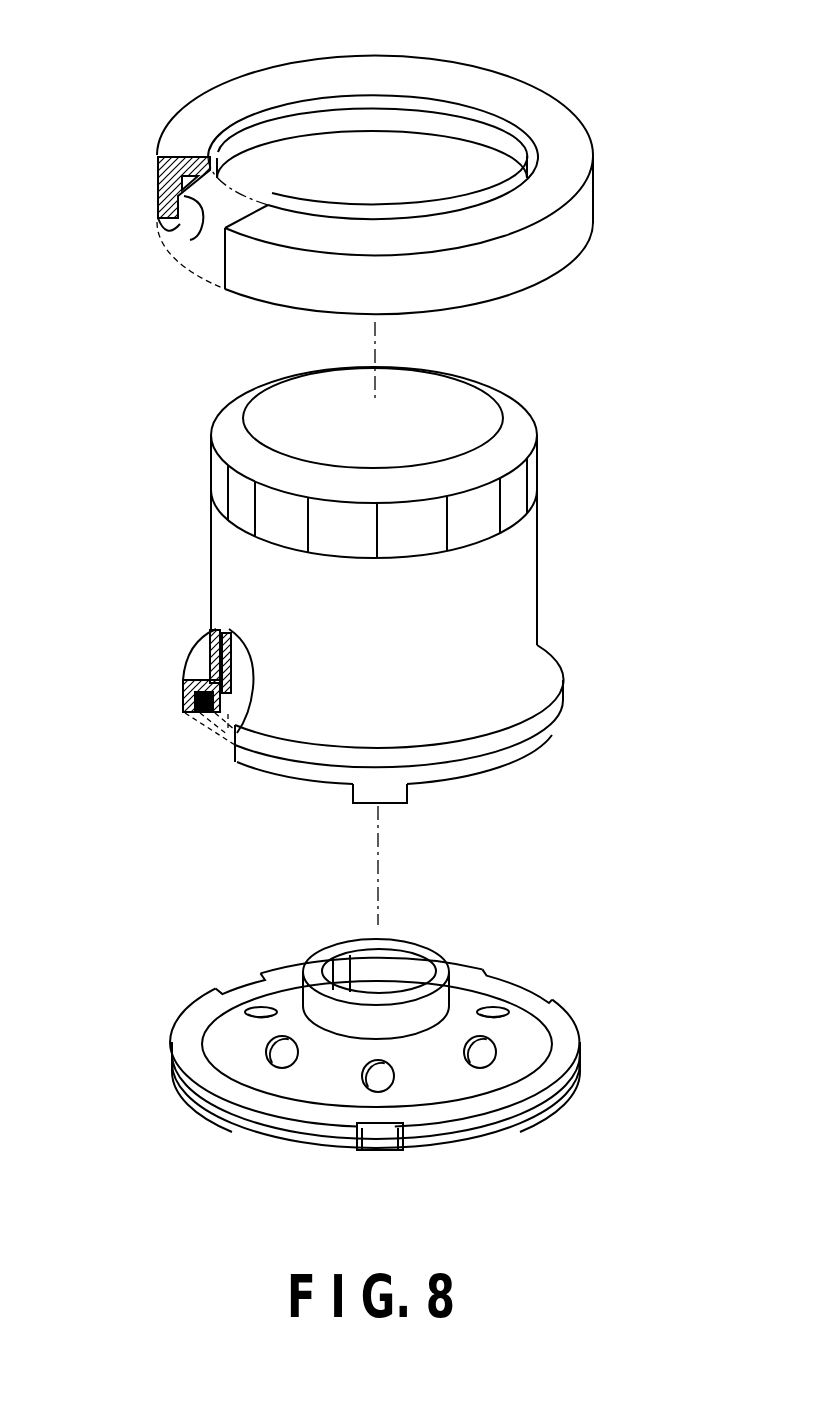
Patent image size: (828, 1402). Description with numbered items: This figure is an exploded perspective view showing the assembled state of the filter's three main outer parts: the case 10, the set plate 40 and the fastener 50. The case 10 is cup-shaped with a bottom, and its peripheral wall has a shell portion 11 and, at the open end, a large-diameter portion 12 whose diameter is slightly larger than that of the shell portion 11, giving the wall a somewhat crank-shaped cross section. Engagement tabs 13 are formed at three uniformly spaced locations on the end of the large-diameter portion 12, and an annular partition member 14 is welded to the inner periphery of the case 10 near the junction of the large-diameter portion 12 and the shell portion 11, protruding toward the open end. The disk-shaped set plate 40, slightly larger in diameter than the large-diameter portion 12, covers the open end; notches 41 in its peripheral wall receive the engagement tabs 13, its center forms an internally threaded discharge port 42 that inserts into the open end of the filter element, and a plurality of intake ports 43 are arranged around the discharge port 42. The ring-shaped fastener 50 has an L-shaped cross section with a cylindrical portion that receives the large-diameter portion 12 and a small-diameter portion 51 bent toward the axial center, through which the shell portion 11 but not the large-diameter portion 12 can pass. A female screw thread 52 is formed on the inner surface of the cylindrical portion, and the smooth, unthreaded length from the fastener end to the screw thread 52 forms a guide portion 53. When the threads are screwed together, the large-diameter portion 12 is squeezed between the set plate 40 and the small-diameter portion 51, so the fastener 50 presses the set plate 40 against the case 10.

The case 10 is at (535, 406).
The shell portion 11 is at (210, 565).
The large-diameter portion 12 is at (183, 697).
The engagement tabs 13 is at (400, 795).
The partition member 14 is at (249, 683).
The set plate 40 is at (187, 1003).
The notches 41 is at (223, 988).
The discharge port 42 is at (418, 963).
The intake ports 43 is at (270, 1060).
The fastener 50 is at (241, 62).
The small-diameter portion 51 is at (181, 163).
The screw thread 52 is at (200, 196).
The guide portion 53 is at (168, 221).